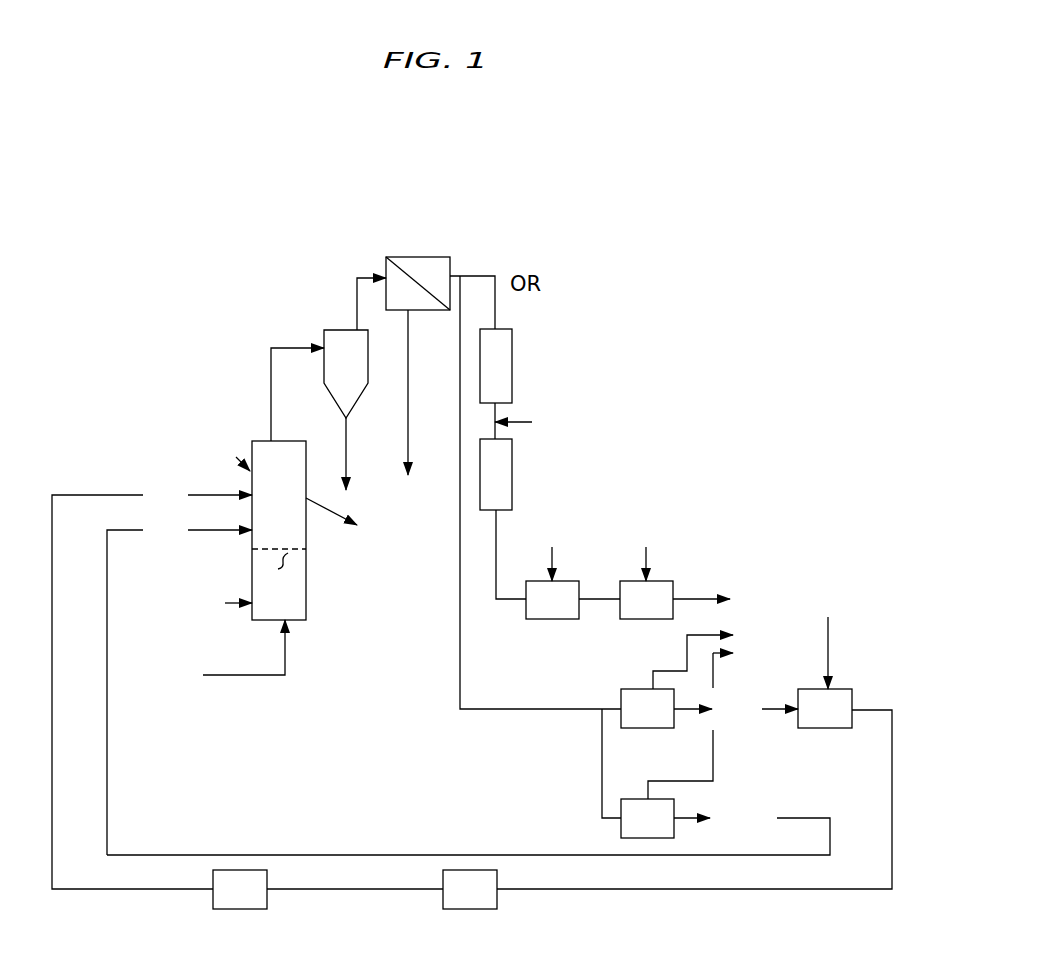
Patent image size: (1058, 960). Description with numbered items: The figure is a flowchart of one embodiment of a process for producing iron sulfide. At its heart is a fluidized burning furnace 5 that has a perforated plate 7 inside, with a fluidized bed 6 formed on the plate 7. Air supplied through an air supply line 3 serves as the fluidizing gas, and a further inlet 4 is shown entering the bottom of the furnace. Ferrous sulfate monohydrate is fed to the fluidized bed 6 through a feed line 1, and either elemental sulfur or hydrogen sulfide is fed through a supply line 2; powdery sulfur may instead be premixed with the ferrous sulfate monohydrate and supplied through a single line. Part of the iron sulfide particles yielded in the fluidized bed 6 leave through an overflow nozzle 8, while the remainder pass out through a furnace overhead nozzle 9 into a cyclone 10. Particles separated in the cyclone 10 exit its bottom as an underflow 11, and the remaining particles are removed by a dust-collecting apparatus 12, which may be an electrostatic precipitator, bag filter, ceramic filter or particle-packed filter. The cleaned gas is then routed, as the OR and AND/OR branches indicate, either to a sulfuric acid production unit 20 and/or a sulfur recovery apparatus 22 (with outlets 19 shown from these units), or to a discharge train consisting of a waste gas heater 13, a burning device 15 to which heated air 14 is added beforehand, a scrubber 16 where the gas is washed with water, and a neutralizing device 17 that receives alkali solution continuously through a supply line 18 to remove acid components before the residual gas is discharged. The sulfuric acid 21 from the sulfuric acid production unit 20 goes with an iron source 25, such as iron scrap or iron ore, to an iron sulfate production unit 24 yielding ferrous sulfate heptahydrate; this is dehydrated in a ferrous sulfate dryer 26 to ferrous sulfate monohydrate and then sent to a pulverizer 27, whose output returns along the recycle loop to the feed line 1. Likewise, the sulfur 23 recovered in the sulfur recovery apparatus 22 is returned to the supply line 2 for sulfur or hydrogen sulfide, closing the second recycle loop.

The feed line for ferrous sulfate monohydrate 1 is at (152, 686).
The supply line for sulfur or hydrogen sulfide 2 is at (179, 686).
The air supply line 3 is at (228, 603).
The gas inlet stream 4 is at (234, 654).
The fluidized burning furnace 5 is at (234, 456).
The fluidized bed 6 is at (279, 530).
The perforated plate 7 is at (279, 566).
The overflow nozzle 8 is at (339, 523).
The furnace overhead nozzle 9 is at (297, 394).
The cyclone 10 is at (346, 374).
The underflow 11 is at (361, 454).
The dust-collecting apparatus 12 is at (403, 366).
The waste gas heater 13 is at (481, 339).
The heated air 14 is at (528, 421).
The burning device 15 is at (503, 519).
The scrubber 16 is at (573, 569).
The neutralizing device 17 is at (675, 600).
The supply line for alkali solution 18 is at (649, 550).
The product outlet stream 19 is at (708, 656).
The sulfuric acid production unit 20 is at (567, 502).
The sulfuric acid 21 is at (736, 709).
The sulfur recovery apparatus 22 is at (657, 773).
The sulfur 23 is at (468, 830).
The iron sulfate production unit 24 is at (694, 789).
The iron source 25 is at (828, 639).
The ferrous sulfate dryer 26 is at (382, 889).
The pulverizer 27 is at (240, 889).